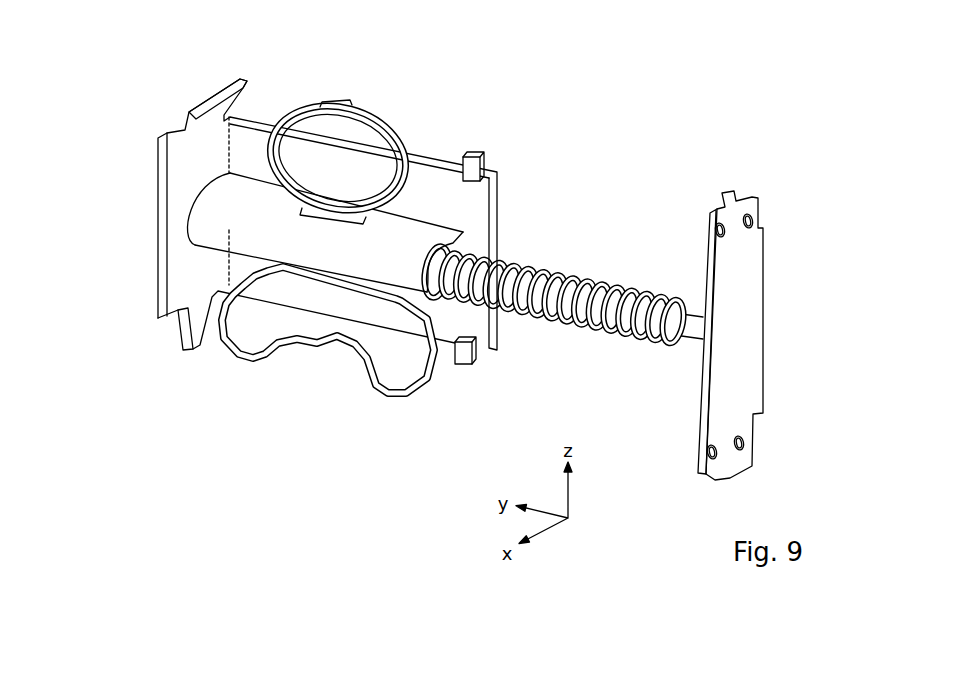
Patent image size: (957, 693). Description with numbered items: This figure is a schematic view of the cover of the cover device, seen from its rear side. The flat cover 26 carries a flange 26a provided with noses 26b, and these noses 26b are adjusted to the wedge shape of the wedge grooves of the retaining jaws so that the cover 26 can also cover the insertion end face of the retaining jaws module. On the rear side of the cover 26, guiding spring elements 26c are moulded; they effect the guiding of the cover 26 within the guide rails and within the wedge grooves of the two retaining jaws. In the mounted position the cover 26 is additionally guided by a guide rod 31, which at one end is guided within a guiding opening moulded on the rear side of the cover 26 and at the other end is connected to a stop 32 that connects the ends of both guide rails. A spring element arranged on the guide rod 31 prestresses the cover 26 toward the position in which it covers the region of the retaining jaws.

The cover 26 is at (425, 148).
The flange 26a is at (158, 183).
The noses 26b is at (208, 100).
The clips 26c is at (370, 117).
The guide rod 31 is at (690, 332).
The stop 32 is at (636, 335).